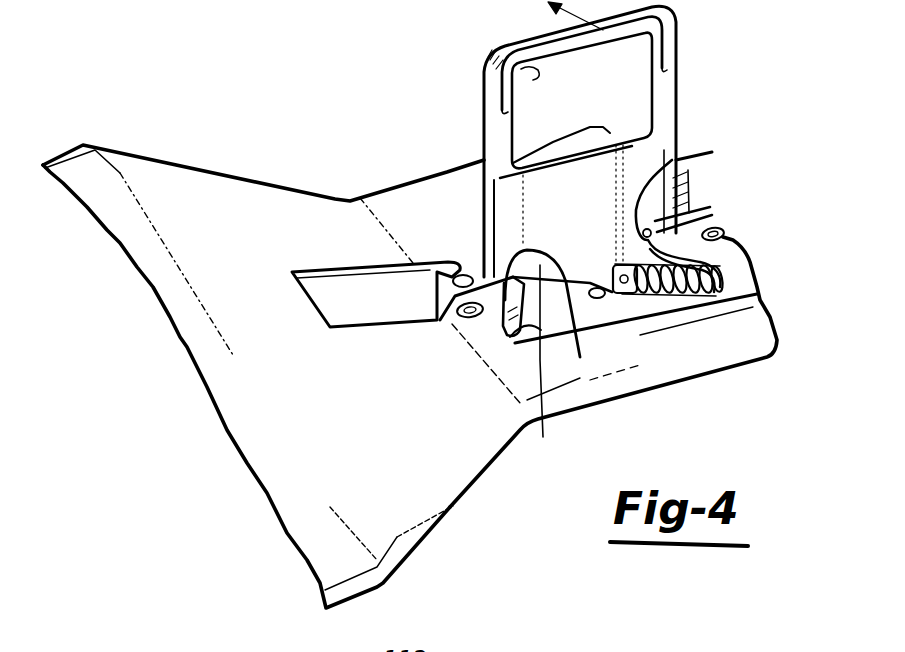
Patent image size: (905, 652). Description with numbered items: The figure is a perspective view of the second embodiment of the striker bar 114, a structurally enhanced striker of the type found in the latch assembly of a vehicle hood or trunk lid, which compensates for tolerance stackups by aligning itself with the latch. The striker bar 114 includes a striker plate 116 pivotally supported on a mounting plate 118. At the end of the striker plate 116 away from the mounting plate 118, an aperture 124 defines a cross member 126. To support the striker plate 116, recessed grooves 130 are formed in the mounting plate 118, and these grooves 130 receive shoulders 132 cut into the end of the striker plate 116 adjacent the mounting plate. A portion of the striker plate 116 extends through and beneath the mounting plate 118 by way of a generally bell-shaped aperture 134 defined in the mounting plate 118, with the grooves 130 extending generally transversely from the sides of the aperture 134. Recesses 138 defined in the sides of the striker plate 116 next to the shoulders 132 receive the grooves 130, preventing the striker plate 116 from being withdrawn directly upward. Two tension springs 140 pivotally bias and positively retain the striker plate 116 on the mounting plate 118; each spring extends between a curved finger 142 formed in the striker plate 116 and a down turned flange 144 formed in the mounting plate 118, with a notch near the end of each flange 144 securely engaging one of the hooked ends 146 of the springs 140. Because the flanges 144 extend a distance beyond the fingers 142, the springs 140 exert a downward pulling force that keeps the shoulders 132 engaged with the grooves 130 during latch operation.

The striker bar 114 is at (374, 103).
The striker plate 116 is at (692, 83).
The mounting plate 118 is at (252, 406).
The aperture 124 is at (535, 70).
The cross member 126 is at (537, 43).
The recessed grooves 130 is at (440, 280).
The shoulders 132 is at (682, 198).
The bell-shaped aperture 134 is at (542, 361).
The recesses 138 is at (668, 173).
The tension springs 140 is at (757, 297).
The curved fingers 142 is at (613, 295).
The down turned flanges 144 is at (452, 304).
The hooked ends 146 is at (645, 297).